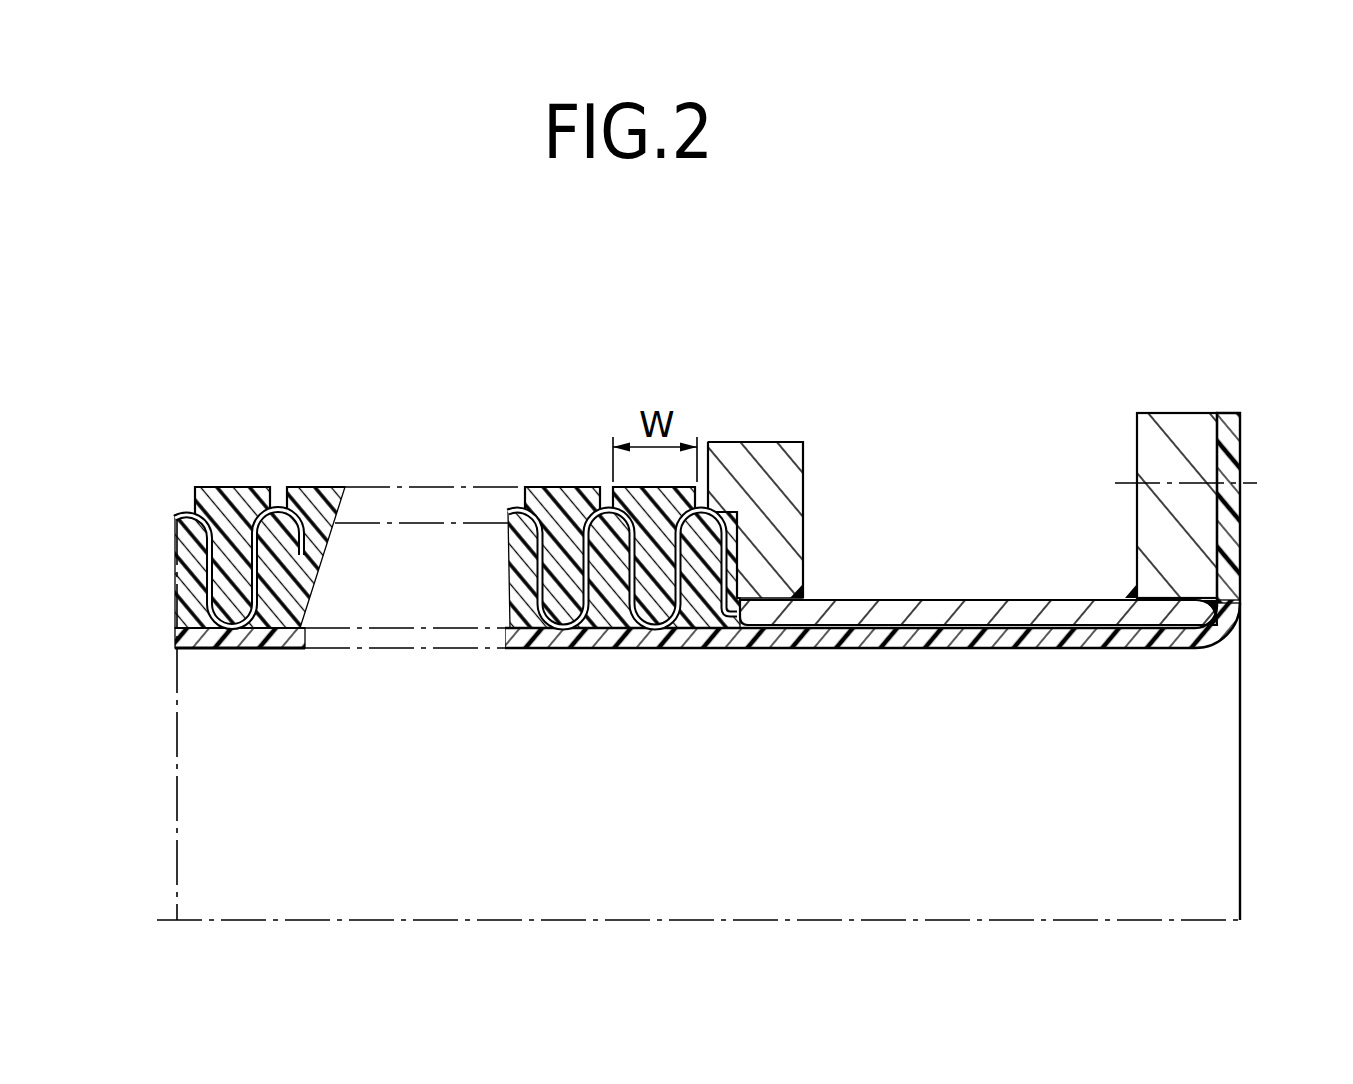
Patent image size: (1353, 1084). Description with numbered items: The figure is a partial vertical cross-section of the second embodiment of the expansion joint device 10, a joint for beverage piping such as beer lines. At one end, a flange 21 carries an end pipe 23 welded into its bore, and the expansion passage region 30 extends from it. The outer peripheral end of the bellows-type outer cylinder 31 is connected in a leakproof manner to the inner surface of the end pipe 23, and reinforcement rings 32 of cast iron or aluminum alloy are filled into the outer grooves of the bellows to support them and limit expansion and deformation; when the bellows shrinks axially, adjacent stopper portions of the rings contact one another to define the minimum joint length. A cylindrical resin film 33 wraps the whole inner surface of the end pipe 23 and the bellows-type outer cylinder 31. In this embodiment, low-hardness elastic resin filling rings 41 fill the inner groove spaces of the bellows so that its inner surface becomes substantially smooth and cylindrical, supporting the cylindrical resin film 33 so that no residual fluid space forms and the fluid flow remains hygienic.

The expansion joint device 10 is at (982, 347).
The flange 21 is at (1175, 437).
The end pipe 23 is at (1018, 615).
The expansion passage region 30 is at (525, 450).
The bellows-type outer cylinder 31 is at (277, 510).
The reinforcement ring 32 is at (232, 500).
The cylindrical resin film 33 is at (818, 636).
The elastic resin filling ring 41 is at (280, 592).